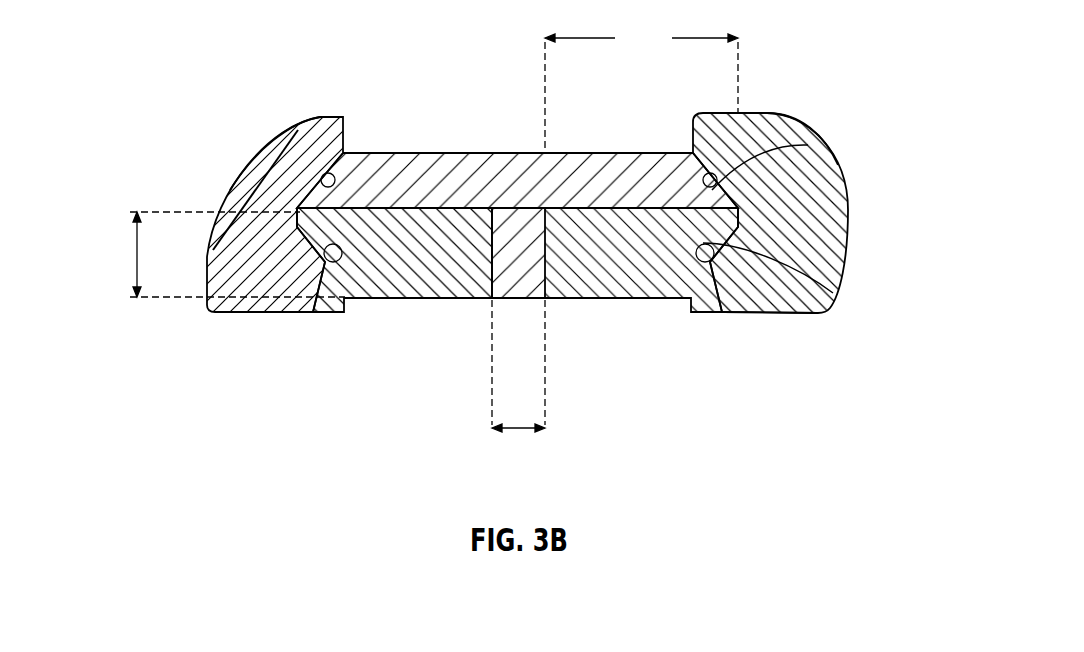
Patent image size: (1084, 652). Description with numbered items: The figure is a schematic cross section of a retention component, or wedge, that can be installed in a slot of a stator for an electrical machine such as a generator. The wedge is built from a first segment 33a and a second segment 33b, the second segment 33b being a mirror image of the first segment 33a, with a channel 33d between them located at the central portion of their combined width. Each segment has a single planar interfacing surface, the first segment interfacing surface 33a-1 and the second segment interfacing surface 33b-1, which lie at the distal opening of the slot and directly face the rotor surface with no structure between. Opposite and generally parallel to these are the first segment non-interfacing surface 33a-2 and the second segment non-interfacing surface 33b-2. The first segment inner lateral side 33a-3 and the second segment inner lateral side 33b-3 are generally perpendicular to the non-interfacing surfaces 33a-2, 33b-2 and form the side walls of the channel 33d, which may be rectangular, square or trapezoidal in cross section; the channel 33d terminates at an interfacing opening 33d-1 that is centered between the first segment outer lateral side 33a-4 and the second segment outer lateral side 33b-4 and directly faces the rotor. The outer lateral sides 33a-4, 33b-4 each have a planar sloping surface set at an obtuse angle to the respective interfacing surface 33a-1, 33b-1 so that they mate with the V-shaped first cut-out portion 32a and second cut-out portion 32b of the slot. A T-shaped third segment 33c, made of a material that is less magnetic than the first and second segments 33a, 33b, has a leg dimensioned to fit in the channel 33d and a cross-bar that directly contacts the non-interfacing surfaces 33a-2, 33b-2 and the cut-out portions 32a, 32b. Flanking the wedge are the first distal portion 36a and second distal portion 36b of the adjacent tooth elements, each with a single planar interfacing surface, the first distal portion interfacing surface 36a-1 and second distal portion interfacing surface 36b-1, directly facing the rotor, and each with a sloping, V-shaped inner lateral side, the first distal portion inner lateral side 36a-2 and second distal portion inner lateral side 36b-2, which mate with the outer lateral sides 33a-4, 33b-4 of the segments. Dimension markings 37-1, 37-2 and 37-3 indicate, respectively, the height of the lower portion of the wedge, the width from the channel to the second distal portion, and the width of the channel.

The first cut-out portion 32a is at (303, 132).
The second cut-out portion 32b is at (736, 113).
The first segment 33a is at (412, 262).
The first segment interfacing surface 33a-1 is at (405, 298).
The first segment non-interfacing surface 33a-2 is at (387, 207).
The first segment inner lateral side 33a-3 is at (492, 282).
The first segment outer lateral side 33a-4 is at (315, 312).
The second segment 33b is at (732, 241).
The second segment interfacing surface 33b-1 is at (668, 297).
The second segment non-interfacing surface 33b-2 is at (642, 198).
The second segment inner lateral side 33b-3 is at (583, 290).
The second segment outer lateral side 33b-4 is at (833, 293).
The third segment 33c is at (567, 160).
The channel 33d is at (522, 248).
The interfacing opening 33d-1 is at (515, 299).
The first distal portion 36a is at (245, 244).
The first distal portion interfacing surface 36a-1 is at (280, 312).
The first distal portion inner lateral side 36a-2 is at (240, 187).
The second distal portion 36b is at (801, 230).
The second distal portion interfacing surface 36b-1 is at (735, 312).
The second distal portion inner lateral side 36b-2 is at (808, 145).
The height dimension 37-1 is at (137, 245).
The width dimension 37-2 is at (641, 88).
The web width dimension 37-3 is at (518, 430).